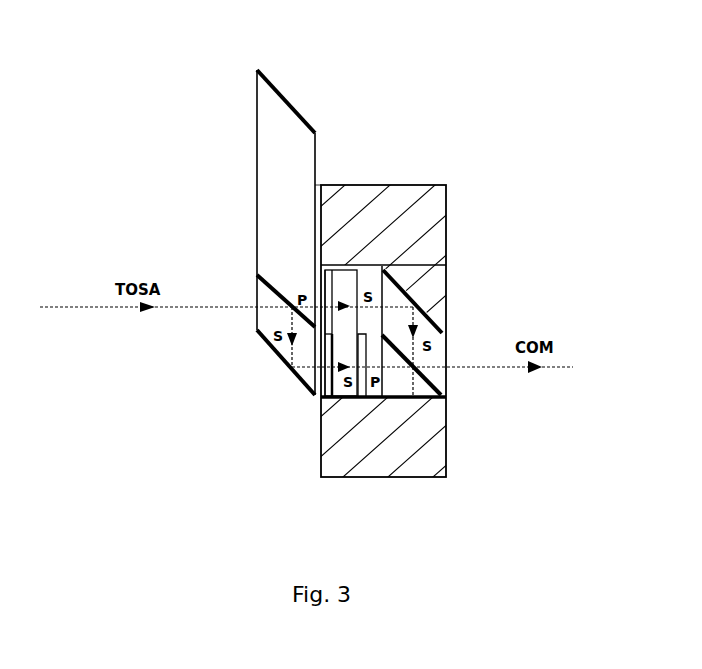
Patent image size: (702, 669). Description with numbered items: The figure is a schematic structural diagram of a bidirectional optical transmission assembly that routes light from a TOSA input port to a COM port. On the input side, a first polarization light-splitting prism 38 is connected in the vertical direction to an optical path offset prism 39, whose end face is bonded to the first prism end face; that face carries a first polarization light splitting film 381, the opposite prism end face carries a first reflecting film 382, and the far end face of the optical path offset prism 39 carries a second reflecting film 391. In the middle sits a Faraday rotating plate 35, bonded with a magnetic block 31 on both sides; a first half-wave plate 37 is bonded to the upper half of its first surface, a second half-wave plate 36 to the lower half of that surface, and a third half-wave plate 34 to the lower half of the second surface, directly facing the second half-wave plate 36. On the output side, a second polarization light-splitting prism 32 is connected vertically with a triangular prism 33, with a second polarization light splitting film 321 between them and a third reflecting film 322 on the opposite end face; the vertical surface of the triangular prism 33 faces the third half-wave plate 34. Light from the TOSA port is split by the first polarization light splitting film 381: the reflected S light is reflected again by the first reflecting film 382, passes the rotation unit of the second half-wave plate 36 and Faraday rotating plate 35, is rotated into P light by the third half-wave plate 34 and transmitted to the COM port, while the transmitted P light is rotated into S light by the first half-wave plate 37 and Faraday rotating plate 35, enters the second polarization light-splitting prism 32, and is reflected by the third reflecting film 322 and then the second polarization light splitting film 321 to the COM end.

The magnetic block 31 is at (398, 450).
The second polarization light-splitting prism 32 is at (323, 309).
The second polarization light splitting film 321 is at (445, 388).
The third reflecting film 322 is at (408, 295).
The triangular prism 33 is at (433, 400).
The third half-wave plate 34 is at (360, 390).
The Faraday rotating plate 35 is at (340, 280).
The second half-wave plate 36 is at (321, 398).
The first half-wave plate 37 is at (317, 266).
The first polarization light-splitting prism 38 is at (249, 301).
The first polarization light splitting film 381 is at (260, 277).
The first reflecting film 382 is at (266, 345).
The optical path offset prism 39 is at (262, 141).
The second reflecting film 391 is at (288, 100).